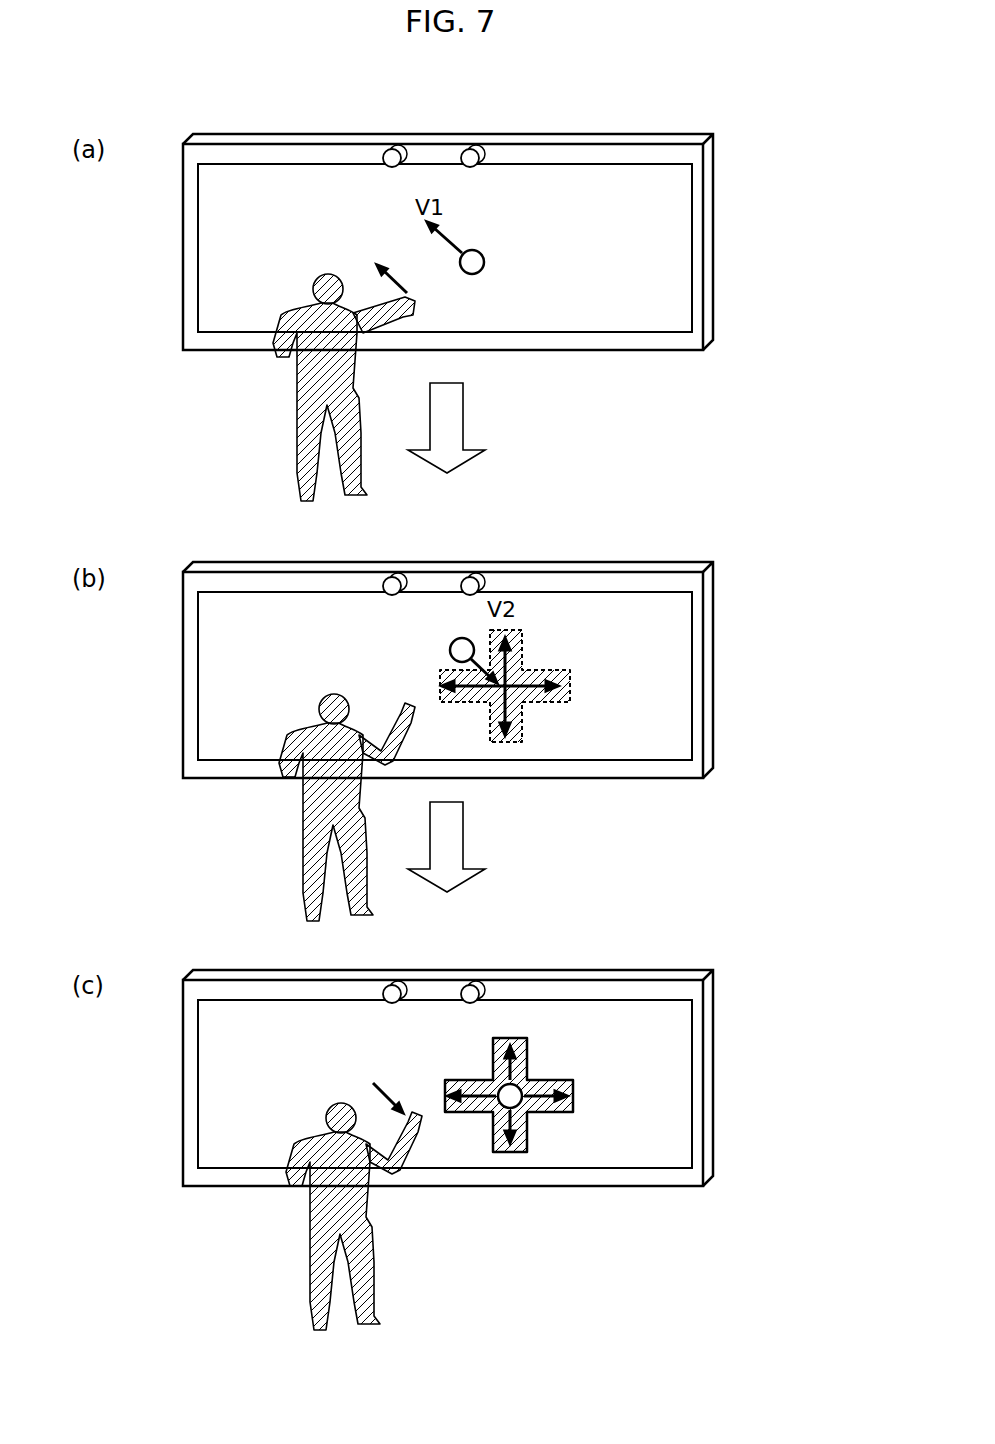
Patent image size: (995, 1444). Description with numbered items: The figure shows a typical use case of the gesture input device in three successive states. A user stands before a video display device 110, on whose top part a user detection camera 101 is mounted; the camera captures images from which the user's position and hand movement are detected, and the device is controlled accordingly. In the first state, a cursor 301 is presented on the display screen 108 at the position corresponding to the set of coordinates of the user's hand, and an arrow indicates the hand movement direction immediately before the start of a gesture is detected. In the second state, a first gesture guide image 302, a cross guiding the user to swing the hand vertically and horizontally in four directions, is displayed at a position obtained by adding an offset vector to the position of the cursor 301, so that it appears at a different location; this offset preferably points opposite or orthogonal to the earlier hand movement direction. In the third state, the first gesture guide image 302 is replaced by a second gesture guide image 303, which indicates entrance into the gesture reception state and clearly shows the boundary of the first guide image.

The user detection camera 101 is at (470, 150).
The display screen 108 is at (212, 232).
The video display device 110 is at (640, 136).
The cursor 301 is at (485, 258).
The first gesture guide image 302 is at (562, 668).
The second gesture guide image 303 is at (575, 1085).